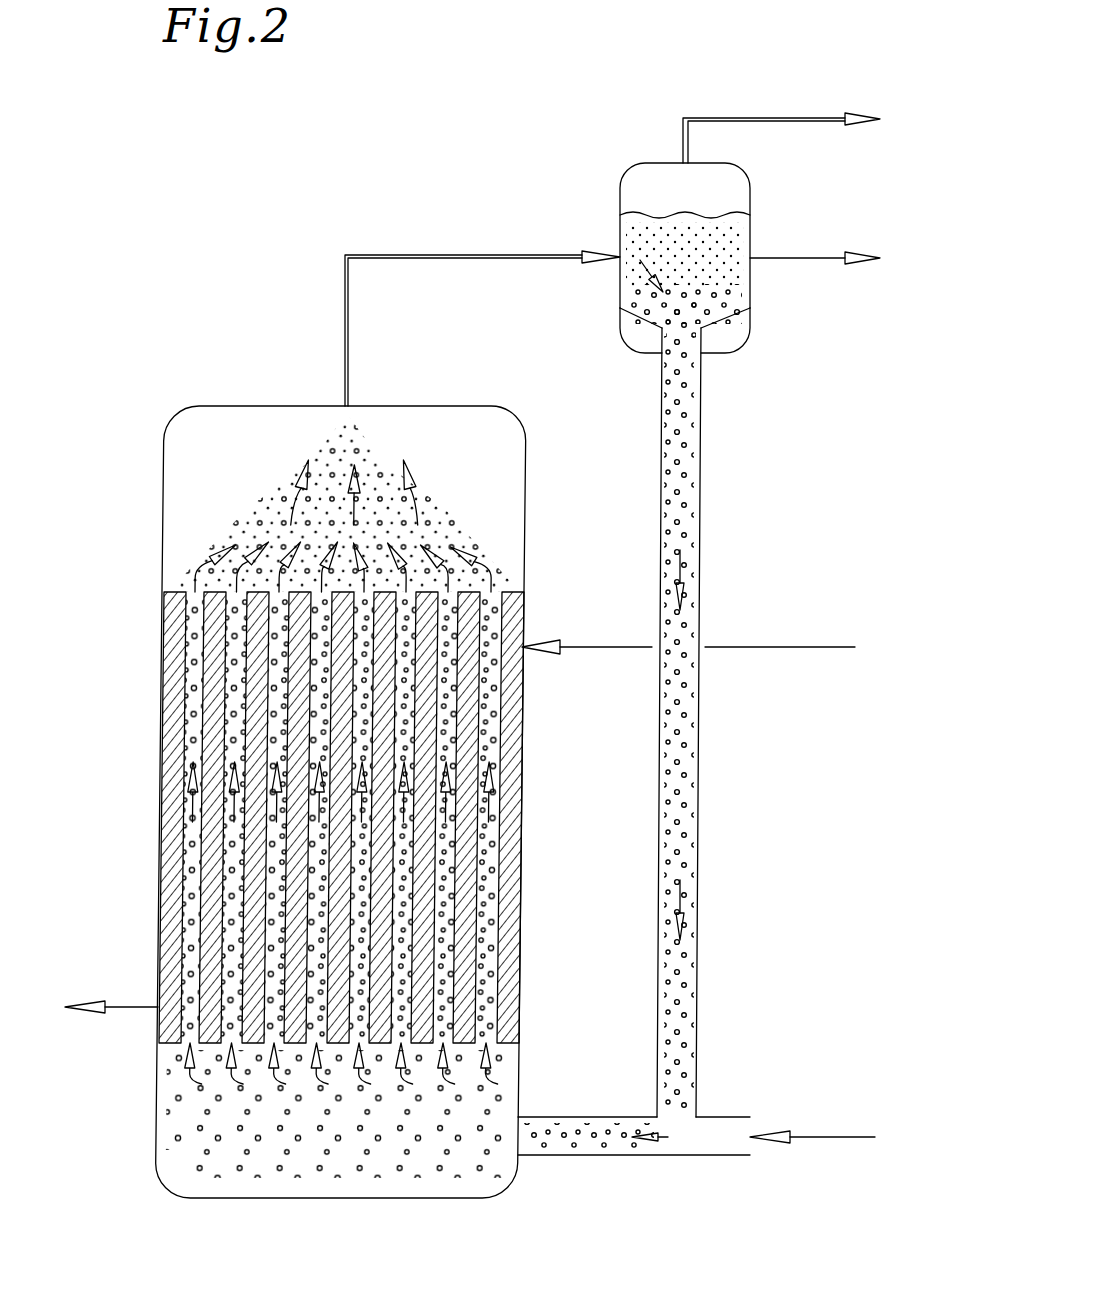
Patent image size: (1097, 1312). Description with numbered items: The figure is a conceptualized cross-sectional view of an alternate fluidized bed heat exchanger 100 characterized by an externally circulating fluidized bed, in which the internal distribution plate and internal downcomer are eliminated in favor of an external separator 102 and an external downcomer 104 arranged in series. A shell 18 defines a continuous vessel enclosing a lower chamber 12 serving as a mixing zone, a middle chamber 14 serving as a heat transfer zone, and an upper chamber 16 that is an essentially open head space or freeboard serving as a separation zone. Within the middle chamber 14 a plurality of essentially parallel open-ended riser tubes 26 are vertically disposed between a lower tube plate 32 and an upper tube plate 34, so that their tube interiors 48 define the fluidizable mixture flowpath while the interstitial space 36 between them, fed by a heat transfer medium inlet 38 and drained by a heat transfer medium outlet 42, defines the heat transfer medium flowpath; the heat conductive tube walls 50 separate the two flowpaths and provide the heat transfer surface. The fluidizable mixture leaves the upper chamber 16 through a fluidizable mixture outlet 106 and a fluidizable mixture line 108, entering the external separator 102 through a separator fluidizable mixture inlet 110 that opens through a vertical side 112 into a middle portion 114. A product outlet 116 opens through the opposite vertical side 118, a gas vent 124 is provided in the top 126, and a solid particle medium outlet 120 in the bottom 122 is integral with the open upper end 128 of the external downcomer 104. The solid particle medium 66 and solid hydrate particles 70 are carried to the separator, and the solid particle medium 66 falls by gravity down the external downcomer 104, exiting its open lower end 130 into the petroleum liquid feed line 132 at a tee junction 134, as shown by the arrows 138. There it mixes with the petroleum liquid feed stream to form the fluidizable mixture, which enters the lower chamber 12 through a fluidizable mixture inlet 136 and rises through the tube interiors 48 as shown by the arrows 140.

The fluidized bed heat exchanger 100 is at (295, 222).
The lower chamber 12 is at (258, 1198).
The middle chamber 14 is at (160, 795).
The upper chamber 16 is at (185, 480).
The shell 18 is at (237, 406).
The tube interiors 48 is at (195, 592).
The tube walls 50 is at (185, 640).
The upper tube plate 34 is at (510, 592).
The interstitial space 36 is at (512, 713).
The heat transfer medium inlet 38 is at (525, 655).
The heat transfer medium outlet 42 is at (158, 1000).
The riser tubes 26 is at (490, 900).
The lower tube plate 32 is at (508, 1043).
The arrows 140 is at (210, 1082).
The fluidizable mixture outlet 106 is at (343, 406).
The fluidizable mixture line 108 is at (437, 255).
The external separator 102 is at (620, 198).
The separator fluidizable mixture inlet 110 is at (620, 252).
The middle portion 114 is at (620, 265).
The vertical side 112 is at (620, 300).
The bottom 122 is at (648, 353).
The solid particle medium outlet 120 is at (705, 353).
The gas vent 124 is at (682, 160).
The top 126 is at (650, 163).
The opposite vertical side 118 is at (752, 205).
The solid hydrate particles 70 is at (735, 250).
The product outlet 116 is at (752, 262).
The open upper end 128 is at (703, 432).
The external downcomer 104 is at (700, 722).
The solid particle medium 66 is at (688, 778).
The arrows 138 is at (700, 912).
The open lower end 130 is at (697, 1053).
The tee junction 134 is at (697, 1117).
The fluidizable mixture inlet 136 is at (522, 1157).
The petroleum liquid feed line 132 is at (725, 1157).